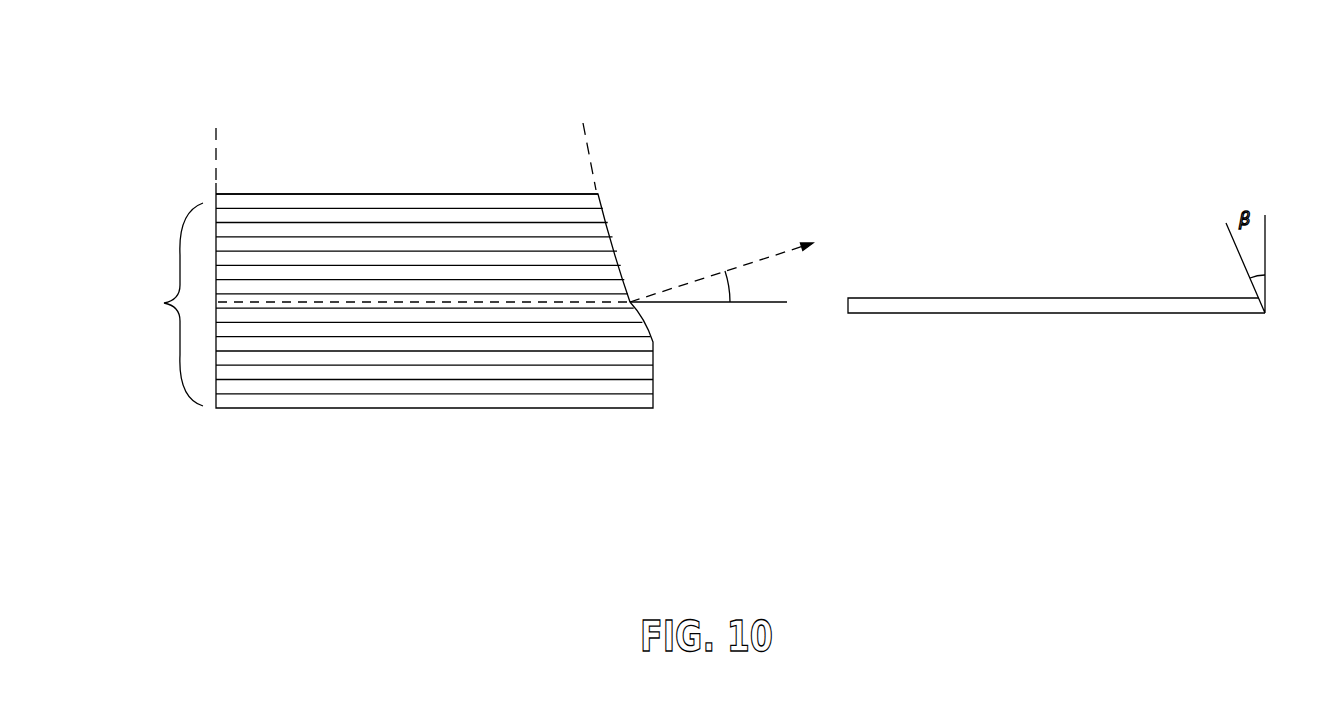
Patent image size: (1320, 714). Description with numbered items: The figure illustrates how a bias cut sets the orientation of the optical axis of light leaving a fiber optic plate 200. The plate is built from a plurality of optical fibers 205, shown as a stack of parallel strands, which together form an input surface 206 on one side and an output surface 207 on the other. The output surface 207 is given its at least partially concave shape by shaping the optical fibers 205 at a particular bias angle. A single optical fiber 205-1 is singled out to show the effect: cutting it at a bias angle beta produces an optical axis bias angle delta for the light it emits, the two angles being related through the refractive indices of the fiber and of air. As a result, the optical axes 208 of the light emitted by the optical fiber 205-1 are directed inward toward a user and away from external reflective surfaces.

The fiber optic plate 200 is at (427, 436).
The optical fibers 205 is at (210, 302).
The optical fiber 205-1 is at (597, 305).
The input surface 206 is at (215, 137).
The output surface 207 is at (593, 167).
The optical axes 208 is at (687, 283).